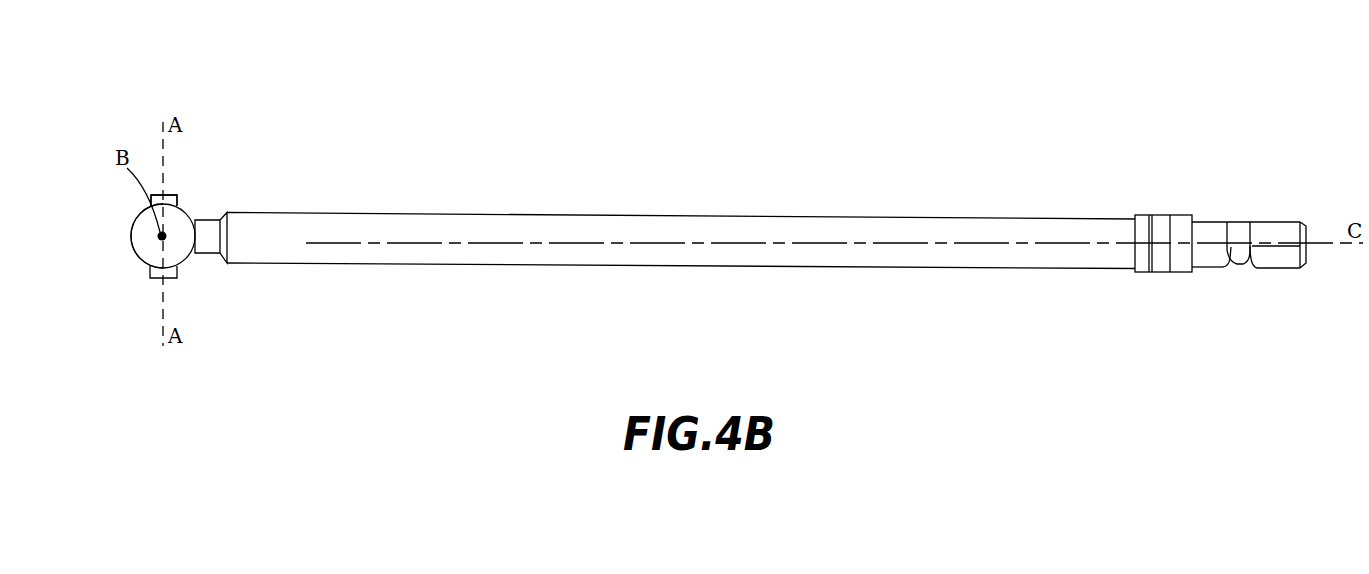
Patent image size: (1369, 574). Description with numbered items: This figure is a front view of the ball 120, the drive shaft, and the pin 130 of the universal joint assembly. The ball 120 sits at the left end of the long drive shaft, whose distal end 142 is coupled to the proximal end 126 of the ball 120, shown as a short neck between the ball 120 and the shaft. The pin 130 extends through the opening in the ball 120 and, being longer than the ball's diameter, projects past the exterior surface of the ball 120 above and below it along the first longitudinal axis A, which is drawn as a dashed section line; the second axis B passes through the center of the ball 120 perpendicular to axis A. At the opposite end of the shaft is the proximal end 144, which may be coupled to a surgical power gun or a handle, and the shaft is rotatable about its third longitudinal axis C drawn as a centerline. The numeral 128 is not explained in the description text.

The ball 120 is at (148, 253).
The proximal end of the ball 126 is at (203, 268).
The outer surface of ball 128 is at (125, 231).
The pin 130 is at (170, 196).
The distal end of the drive shaft 142 is at (224, 205).
The proximal end of the drive shaft 144 is at (1208, 198).